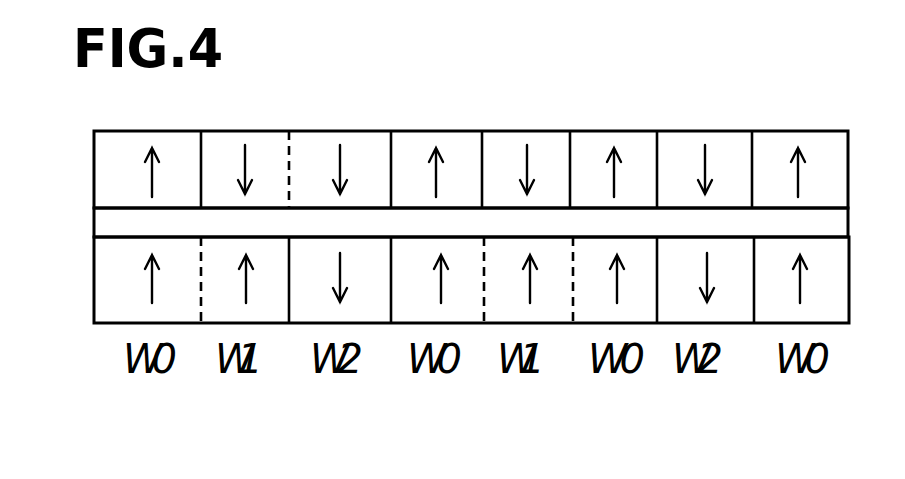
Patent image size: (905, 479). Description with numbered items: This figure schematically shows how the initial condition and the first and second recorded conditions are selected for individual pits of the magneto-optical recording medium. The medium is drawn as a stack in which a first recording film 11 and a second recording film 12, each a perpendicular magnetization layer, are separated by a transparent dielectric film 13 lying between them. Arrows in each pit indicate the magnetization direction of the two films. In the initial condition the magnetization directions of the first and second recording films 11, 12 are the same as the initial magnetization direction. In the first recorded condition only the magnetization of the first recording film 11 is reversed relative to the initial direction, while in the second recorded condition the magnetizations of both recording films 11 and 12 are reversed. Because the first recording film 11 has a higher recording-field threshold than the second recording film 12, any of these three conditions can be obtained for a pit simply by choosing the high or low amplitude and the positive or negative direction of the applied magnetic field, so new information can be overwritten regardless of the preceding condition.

The first recording film 11 is at (80, 131).
The second recording film 12 is at (80, 237).
The transparent dielectric film 13 is at (94, 220).